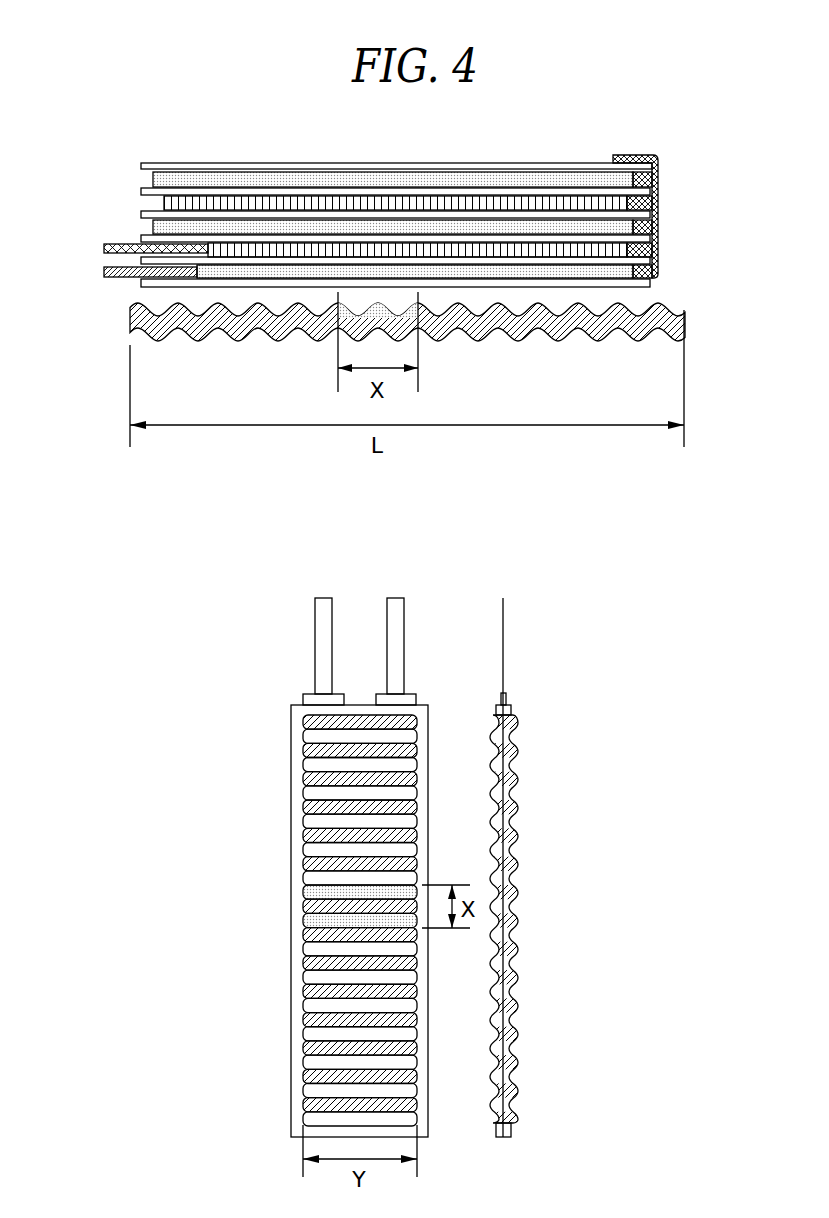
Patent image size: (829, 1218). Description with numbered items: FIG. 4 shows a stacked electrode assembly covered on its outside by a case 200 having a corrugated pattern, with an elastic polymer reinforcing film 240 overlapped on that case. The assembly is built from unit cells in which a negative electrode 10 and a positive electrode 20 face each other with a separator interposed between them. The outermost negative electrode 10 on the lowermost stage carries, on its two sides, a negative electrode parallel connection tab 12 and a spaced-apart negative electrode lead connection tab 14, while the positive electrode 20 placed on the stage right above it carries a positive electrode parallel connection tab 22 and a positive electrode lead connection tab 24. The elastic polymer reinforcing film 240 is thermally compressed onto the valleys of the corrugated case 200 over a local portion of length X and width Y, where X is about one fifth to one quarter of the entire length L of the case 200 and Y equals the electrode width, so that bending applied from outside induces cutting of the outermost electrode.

The negative electrode 10 is at (215, 269).
The negative electrode parallel connection tab 12 is at (650, 274).
The negative electrode lead connection tab 14 is at (110, 272).
The positive electrode 20 is at (218, 250).
The positive electrode parallel connection tab 22 is at (650, 247).
The positive electrode lead connection tab 24 is at (110, 250).
The case 200 is at (444, 356).
The elastic polymer reinforcing film 240 is at (400, 312).